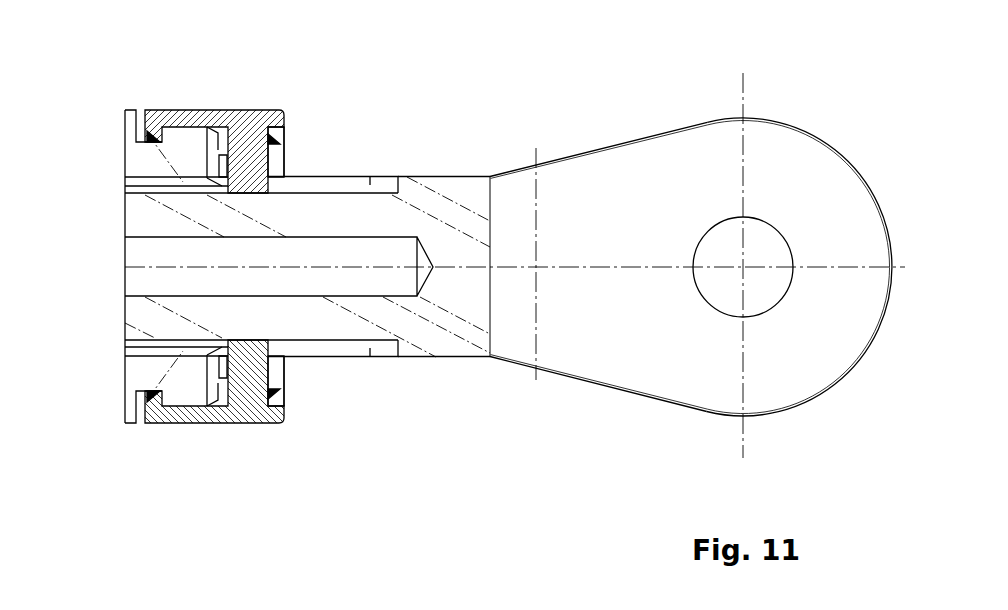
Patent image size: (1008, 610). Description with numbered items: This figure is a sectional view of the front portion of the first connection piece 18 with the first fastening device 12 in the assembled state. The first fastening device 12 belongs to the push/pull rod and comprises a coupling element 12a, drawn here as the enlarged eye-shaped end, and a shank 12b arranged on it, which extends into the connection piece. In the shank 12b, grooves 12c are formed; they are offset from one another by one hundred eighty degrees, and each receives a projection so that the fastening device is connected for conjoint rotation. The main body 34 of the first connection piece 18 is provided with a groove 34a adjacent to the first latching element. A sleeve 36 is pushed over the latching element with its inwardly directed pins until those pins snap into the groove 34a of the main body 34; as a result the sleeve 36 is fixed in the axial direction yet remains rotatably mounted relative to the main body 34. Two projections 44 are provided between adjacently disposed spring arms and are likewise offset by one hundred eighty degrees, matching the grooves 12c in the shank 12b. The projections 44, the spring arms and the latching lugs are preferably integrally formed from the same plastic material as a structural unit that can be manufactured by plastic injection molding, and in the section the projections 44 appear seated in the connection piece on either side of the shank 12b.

The first fastening device 12 is at (648, 137).
The coupling element 12a is at (780, 148).
The shank 12b is at (437, 347).
The groove 12c is at (395, 356).
The first connection piece 18 is at (123, 85).
The main body 34 is at (158, 376).
The groove 34a is at (143, 126).
The sleeve 36 is at (261, 410).
The projection 44 is at (276, 163).